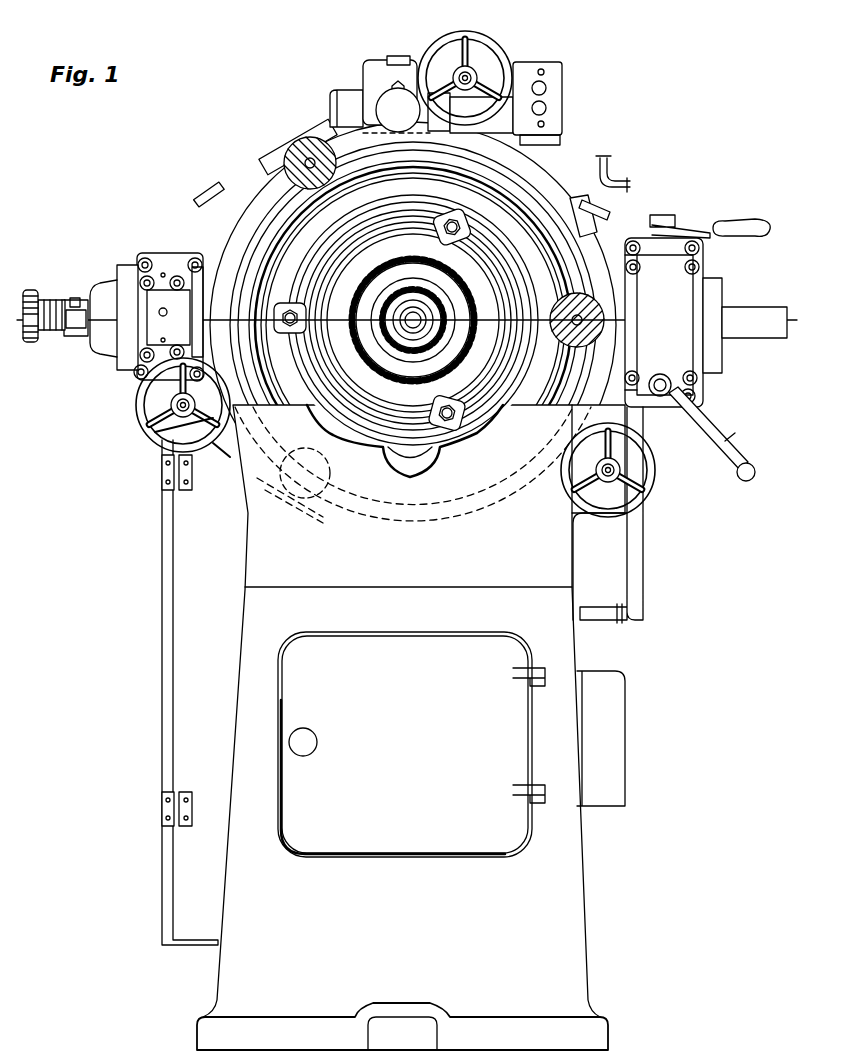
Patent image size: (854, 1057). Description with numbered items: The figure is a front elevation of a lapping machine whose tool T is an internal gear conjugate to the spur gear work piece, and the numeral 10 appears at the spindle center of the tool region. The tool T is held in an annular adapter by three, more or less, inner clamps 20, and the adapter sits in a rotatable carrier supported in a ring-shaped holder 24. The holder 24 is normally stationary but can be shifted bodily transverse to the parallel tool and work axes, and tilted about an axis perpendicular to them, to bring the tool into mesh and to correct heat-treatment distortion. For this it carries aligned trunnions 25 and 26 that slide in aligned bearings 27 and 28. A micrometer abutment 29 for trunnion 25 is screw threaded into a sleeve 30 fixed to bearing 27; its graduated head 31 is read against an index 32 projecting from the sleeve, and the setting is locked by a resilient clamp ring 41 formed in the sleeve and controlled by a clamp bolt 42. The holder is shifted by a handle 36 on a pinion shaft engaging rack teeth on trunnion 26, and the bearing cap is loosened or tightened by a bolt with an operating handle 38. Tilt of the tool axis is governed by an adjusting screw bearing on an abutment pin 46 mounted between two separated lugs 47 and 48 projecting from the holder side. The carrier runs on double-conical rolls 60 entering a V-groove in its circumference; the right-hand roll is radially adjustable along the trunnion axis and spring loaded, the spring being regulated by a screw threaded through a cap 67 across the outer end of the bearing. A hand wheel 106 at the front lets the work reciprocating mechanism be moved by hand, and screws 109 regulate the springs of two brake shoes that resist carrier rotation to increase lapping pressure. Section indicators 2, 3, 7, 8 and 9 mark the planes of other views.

The section line 2- 2 is at (17, 320).
The section line 3- 3 is at (398, 33).
The section line 7- 7 is at (173, 192).
The section line 8- 8 is at (662, 420).
The section line 9- 9 is at (178, 388).
The work gear 10 is at (392, 337).
The inner clamps 20 is at (310, 310).
The holder 24 is at (530, 170).
The trunnion 25 is at (197, 322).
The trunnion 26 is at (707, 295).
The bearing 27 is at (157, 277).
The bearing 28 is at (693, 317).
The abutment 29 is at (50, 300).
The sleeve 30 is at (67, 290).
The head 31 is at (32, 333).
The index 32 is at (28, 293).
The handle 36 is at (740, 226).
The operating handle 38 is at (740, 465).
The resilient clamp ring 41 is at (77, 333).
The clamp bolt 42 is at (75, 300).
The abutment pin 46 is at (372, 105).
The lug 47 is at (340, 105).
The lug 48 is at (440, 117).
The rolls 60 is at (300, 158).
The cap 67 is at (763, 333).
The hand wheel 106 is at (647, 495).
The screw 109 is at (205, 193).
The tool T is at (387, 277).